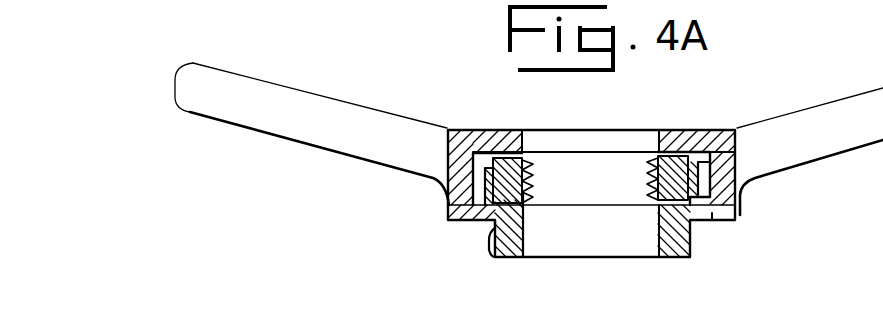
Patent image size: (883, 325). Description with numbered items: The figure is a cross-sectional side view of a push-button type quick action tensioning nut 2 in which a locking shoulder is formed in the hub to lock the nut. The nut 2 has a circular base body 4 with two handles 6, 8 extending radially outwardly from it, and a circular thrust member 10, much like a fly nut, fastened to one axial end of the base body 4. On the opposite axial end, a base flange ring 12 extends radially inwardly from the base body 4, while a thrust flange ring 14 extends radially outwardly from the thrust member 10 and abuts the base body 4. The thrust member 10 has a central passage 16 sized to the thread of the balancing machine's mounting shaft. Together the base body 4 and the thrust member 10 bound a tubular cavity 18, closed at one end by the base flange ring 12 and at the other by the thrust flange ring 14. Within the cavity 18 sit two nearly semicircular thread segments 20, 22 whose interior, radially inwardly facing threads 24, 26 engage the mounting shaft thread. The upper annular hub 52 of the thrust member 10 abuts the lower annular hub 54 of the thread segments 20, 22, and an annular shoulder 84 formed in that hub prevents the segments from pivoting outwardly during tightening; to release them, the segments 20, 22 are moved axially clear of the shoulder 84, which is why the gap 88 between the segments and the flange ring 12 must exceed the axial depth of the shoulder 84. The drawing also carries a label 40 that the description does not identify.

The quick action tensioning nut 2 is at (472, 297).
The base body 4 is at (738, 192).
The handle 6 is at (347, 118).
The handle 8 is at (837, 113).
The thrust member 10 is at (672, 250).
The base flange ring 12 is at (665, 145).
The thrust flange ring 14 is at (708, 223).
The central passage 16 is at (548, 232).
The tubular cavity 18 is at (743, 145).
The thread segment 20 is at (508, 150).
The thread segment 22 is at (712, 145).
The thread 24 is at (552, 152).
The thread 26 is at (648, 172).
The recess 40 is at (483, 150).
The upper annular hub 52 is at (492, 222).
The lower annular hub 54 is at (518, 258).
The annular shoulder 84 is at (470, 218).
The gap 88 is at (682, 145).